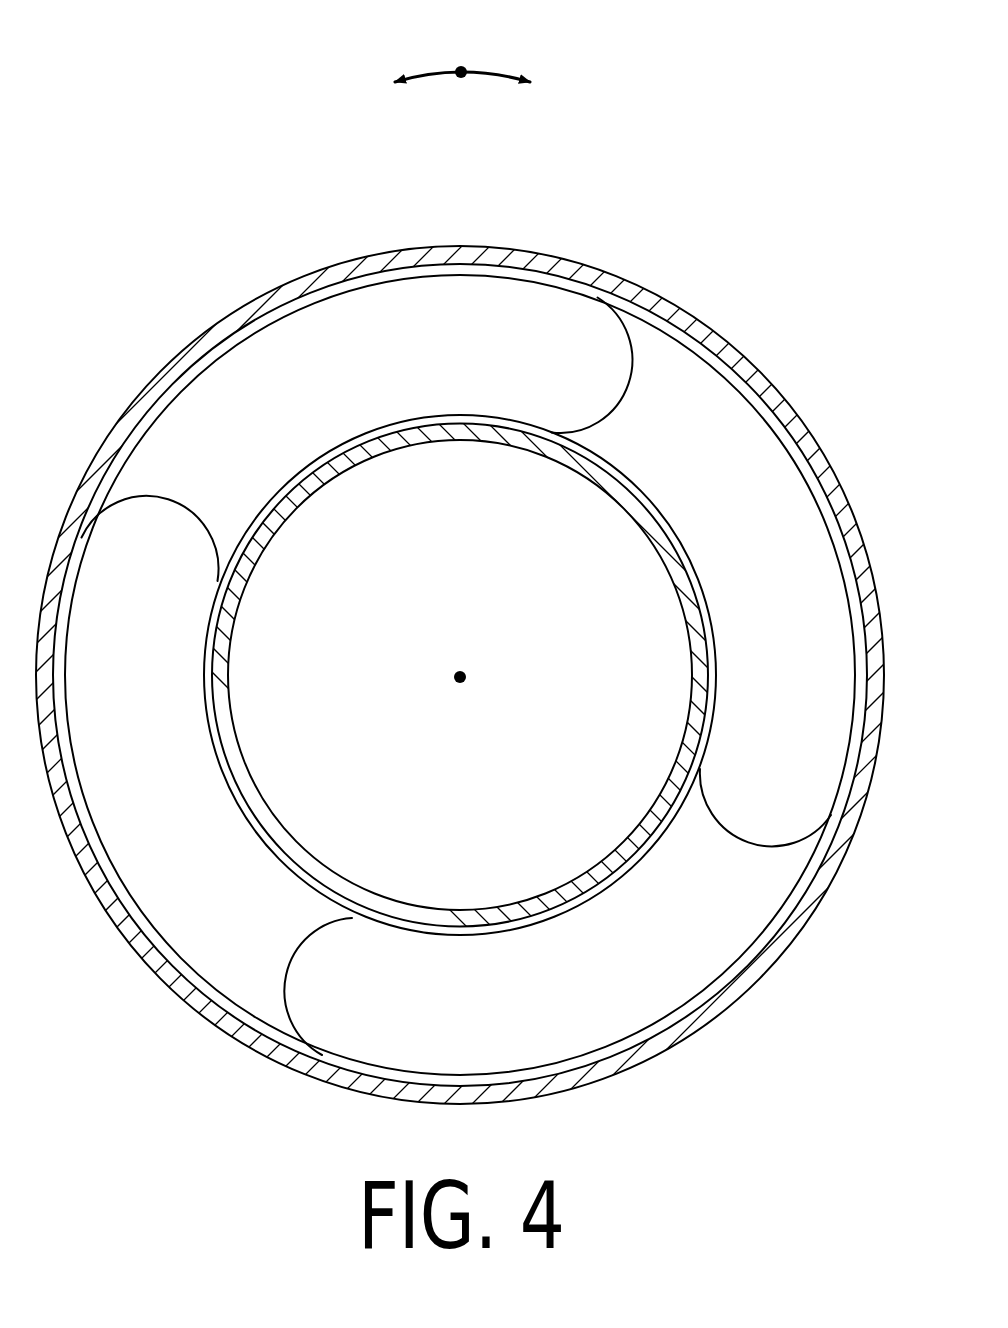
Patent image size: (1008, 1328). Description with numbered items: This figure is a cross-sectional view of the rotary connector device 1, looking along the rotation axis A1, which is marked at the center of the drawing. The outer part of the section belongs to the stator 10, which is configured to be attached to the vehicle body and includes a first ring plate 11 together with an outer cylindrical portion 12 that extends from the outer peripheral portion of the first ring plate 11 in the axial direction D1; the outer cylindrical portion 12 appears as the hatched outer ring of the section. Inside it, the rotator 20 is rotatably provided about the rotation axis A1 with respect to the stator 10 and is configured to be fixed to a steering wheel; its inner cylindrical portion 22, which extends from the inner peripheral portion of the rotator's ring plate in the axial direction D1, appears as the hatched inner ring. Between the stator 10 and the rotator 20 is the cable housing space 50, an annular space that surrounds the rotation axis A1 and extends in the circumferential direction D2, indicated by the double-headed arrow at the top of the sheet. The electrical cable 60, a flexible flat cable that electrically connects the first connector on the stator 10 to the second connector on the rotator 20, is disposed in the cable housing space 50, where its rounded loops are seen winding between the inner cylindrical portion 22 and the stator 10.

The rotary connector device 1 is at (504, 603).
The stator 10 is at (504, 675).
The first ring plate 11 is at (742, 478).
The outer cylindrical portion 12 is at (756, 352).
The rotator 20 is at (504, 675).
The inner cylindrical portion 22 is at (234, 662).
The cable housing space 50 is at (379, 336).
The electrical cable 60 is at (196, 506).
The rotation axis A1 is at (462, 684).
The axial direction D1 is at (461, 70).
The circumferential direction D2 is at (487, 72).